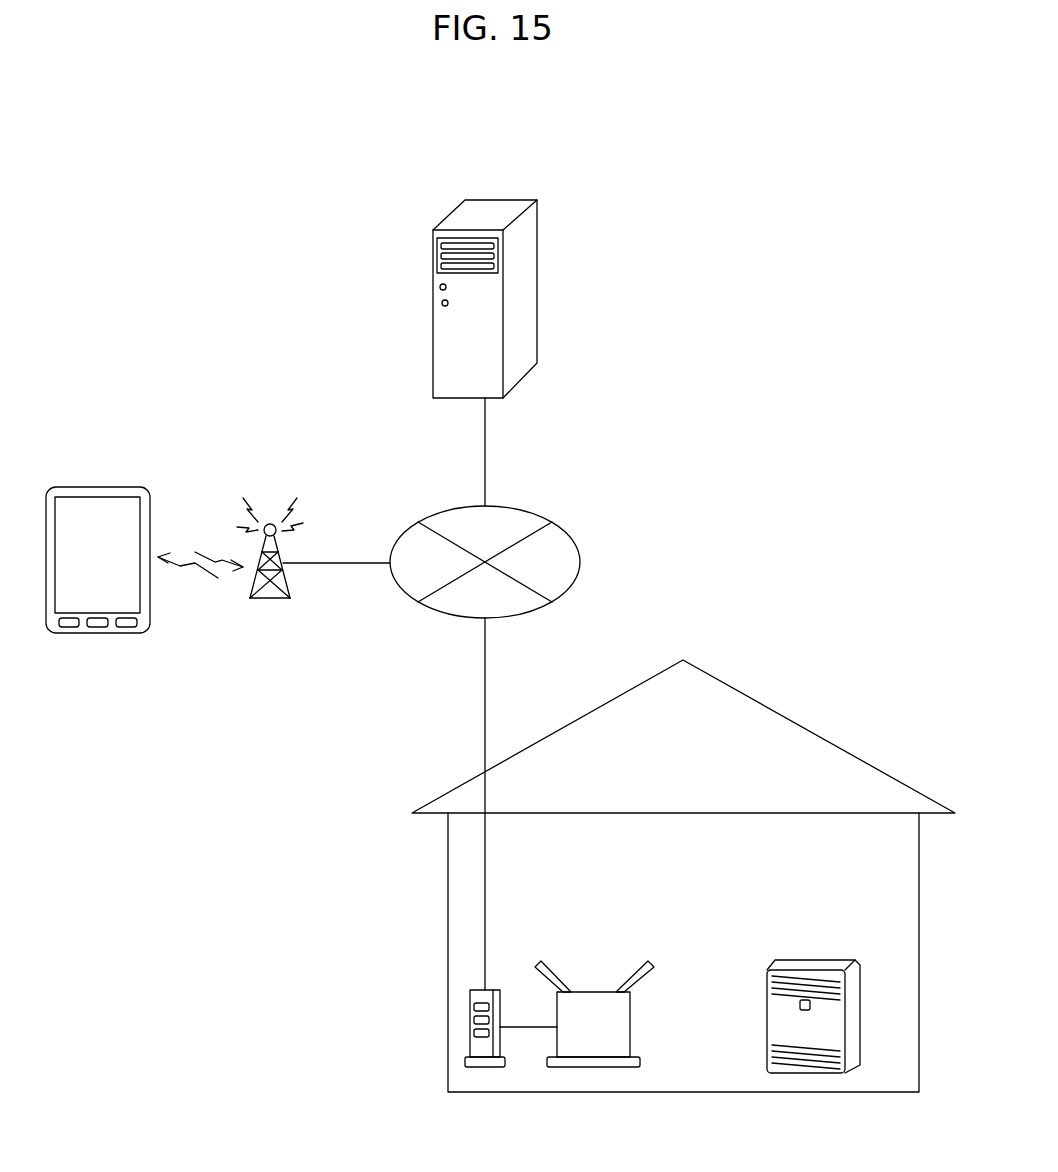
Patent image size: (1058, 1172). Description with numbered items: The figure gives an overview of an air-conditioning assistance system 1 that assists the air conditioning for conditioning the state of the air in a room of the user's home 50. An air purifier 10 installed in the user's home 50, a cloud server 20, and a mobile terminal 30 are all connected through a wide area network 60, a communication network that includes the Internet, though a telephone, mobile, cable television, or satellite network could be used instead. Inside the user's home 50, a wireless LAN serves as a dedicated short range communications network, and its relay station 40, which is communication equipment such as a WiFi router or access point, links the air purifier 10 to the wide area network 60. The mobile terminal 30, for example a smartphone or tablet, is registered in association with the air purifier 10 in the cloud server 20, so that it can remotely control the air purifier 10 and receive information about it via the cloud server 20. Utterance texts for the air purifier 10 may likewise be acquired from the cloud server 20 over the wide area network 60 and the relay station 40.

The air-conditioning assistance system 1 is at (778, 208).
The air purifier 10 is at (830, 965).
The cloud server 20 is at (513, 200).
The mobile terminal 30 is at (118, 470).
The relay station 40 is at (632, 1025).
The user's home 50 is at (919, 858).
The wide area network 60 is at (537, 512).